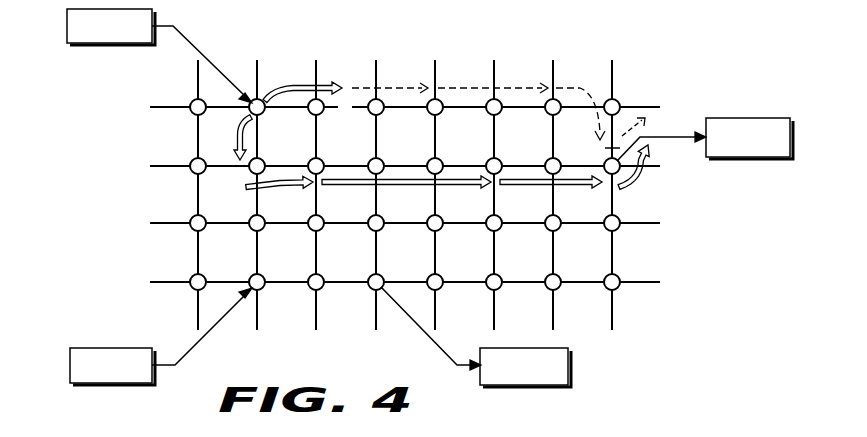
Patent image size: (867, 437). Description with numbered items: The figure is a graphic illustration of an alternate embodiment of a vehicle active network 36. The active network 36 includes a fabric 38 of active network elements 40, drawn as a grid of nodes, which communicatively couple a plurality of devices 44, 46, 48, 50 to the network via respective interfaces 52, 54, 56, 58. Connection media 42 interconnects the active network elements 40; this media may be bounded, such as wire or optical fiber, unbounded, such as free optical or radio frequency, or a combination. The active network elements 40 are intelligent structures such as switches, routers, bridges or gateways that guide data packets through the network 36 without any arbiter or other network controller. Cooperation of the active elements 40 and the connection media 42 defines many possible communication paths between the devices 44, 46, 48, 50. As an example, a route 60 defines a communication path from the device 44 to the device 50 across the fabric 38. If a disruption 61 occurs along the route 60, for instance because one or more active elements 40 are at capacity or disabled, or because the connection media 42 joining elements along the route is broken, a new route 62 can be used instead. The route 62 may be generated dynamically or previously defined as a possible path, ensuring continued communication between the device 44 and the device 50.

The active network 36 is at (402, 201).
The fabric 38 is at (498, 61).
The active network elements 40 is at (194, 113).
The connection media 42 is at (464, 110).
The device 44 is at (113, 45).
The device 46 is at (113, 346).
The device 48 is at (570, 371).
The device 50 is at (747, 158).
The interface 52 is at (182, 40).
The interface 54 is at (217, 323).
The interface 56 is at (414, 325).
The interface 58 is at (683, 140).
The route 60 is at (283, 87).
The disruption 61 is at (347, 113).
The route 62 is at (243, 173).